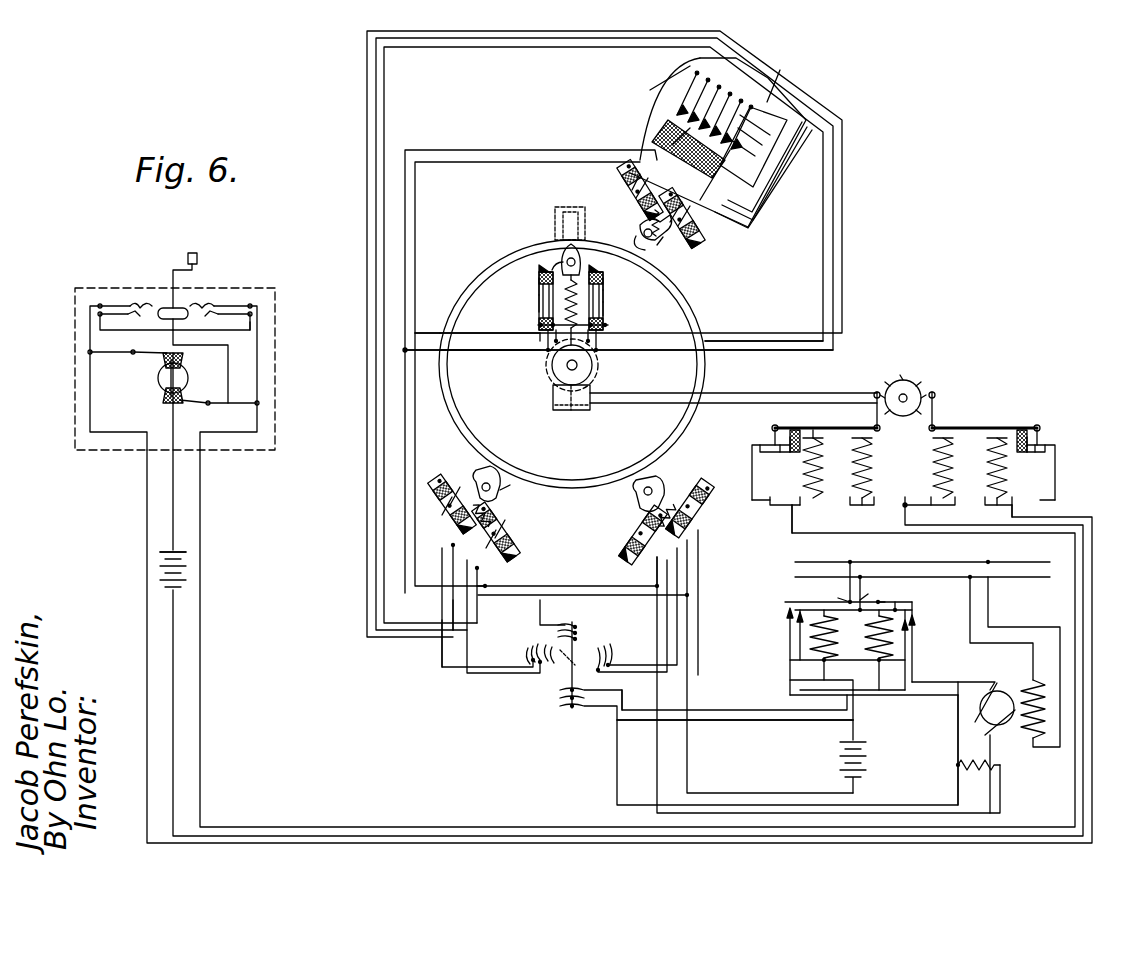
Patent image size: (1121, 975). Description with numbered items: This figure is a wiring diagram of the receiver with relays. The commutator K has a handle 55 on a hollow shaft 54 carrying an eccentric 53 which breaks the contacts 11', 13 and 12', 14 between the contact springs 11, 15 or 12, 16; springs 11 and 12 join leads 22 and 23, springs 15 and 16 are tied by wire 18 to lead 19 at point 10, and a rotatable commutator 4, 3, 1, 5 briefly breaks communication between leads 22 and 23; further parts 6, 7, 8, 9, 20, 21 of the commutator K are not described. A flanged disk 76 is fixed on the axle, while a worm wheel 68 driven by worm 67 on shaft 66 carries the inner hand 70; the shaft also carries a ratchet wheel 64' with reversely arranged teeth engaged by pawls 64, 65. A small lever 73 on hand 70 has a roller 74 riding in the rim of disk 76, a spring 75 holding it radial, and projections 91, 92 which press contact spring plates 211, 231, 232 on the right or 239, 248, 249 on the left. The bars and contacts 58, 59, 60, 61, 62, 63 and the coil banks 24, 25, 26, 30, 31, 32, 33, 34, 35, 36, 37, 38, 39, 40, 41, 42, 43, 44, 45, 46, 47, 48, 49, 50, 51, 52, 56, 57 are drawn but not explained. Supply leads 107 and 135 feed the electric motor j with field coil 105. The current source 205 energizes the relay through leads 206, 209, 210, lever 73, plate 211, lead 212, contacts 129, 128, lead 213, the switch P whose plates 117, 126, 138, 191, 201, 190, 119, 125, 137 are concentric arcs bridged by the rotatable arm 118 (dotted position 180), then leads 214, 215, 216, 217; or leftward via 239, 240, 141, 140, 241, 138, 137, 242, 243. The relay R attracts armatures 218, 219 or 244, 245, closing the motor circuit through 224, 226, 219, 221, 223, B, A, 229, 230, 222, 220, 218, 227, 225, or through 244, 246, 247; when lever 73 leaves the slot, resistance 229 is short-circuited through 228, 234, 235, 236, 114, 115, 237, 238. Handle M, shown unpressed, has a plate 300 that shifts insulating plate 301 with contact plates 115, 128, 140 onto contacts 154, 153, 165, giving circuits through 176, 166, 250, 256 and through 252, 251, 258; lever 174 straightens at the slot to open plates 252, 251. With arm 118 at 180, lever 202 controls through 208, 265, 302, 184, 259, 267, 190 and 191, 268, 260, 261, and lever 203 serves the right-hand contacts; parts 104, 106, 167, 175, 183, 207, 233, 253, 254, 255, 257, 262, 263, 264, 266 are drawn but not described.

The commutator disk 1 is at (186, 379).
The commutator part 3 is at (168, 378).
The commutator part 4 is at (183, 360).
The commutator part 5 is at (184, 395).
The contact 6 is at (138, 349).
The contact 7 is at (110, 346).
The terminal 8 is at (99, 305).
The terminal 9 is at (251, 305).
The connection point 10 is at (176, 333).
The contact spring 11 is at (115, 297).
The contact 11' is at (141, 298).
The contact spring 12 is at (232, 297).
The contact 12' is at (203, 298).
The contact 13 is at (135, 320).
The contact 14 is at (206, 320).
The contact spring 15 is at (113, 321).
The contact spring 16 is at (235, 321).
The wire 18 is at (247, 328).
The lead 19 is at (175, 540).
The battery plate 20 is at (177, 545).
The conductor 21 is at (173, 622).
The lead 22 is at (108, 406).
The lead 23 is at (255, 380).
The terminal 24 is at (920, 494).
The resistor base 25 is at (935, 482).
The terminal 26 is at (955, 500).
The terminal 30 is at (1010, 499).
The terminal 31 is at (972, 506).
The conductor 32 is at (1005, 508).
The frame 33 is at (1055, 480).
The contact 34 is at (1047, 455).
The contact 35 is at (1030, 456).
The contact 36 is at (1038, 442).
The contact 37 is at (1040, 442).
The frame 38 is at (1055, 492).
The resistor base 39 is at (875, 498).
The terminal 40 is at (860, 506).
The resistance coil 41 is at (873, 466).
The resistance coil 42 is at (874, 445).
The terminal 43 is at (825, 448).
The terminal 44 is at (778, 506).
The terminal 45 is at (815, 504).
The conductor 46 is at (790, 512).
The frame 47 is at (752, 488).
The contact 48 is at (758, 452).
The contact 49 is at (789, 455).
The contact 50 is at (778, 446).
The contact 51 is at (772, 437).
The frame 52 is at (752, 478).
The eccentric 53 is at (166, 320).
The shaft 54 is at (173, 268).
The handle 55 is at (194, 252).
The resistance coil 56 is at (954, 468).
The resistance coil 57 is at (824, 464).
The contact bar 58 is at (972, 426).
The contact bar 59 is at (830, 426).
The contact block 60 is at (1022, 428).
The contact block 61 is at (795, 428).
The pivot 62 is at (1038, 425).
The pivot 63 is at (775, 425).
The pawl 64 is at (943, 403).
The ratchet wheel 64' is at (908, 389).
The pawl 65 is at (875, 392).
The shaft 66 is at (745, 393).
The worm 67 is at (570, 410).
The worm wheel 68 is at (594, 367).
The inner hand 70 is at (572, 332).
The small lever 73 is at (580, 264).
The roller 74 is at (560, 262).
The spring 75 is at (575, 312).
The flanged disk 76 is at (690, 312).
The projection 91 is at (605, 272).
The projection 92 is at (544, 270).
The conductor 104 is at (1010, 627).
The field coil 105 is at (1040, 684).
The conductor 106 is at (970, 604).
The motor supply lead 107 is at (925, 562).
The contact 114 is at (690, 80).
The contact plate 115 is at (692, 90).
The switch plate 117 is at (577, 624).
The rotatable arm 118 is at (590, 655).
The switch plate 119 is at (560, 707).
The switch plate 125 is at (560, 699).
The switch plate 126 is at (578, 630).
The contact plate 128 is at (700, 118).
The contact 129 is at (696, 110).
The motor supply lead 135 is at (930, 577).
The switch plate 137 is at (560, 690).
The switch plate 138 is at (578, 638).
The contact plate 140 is at (752, 167).
The contact 141 is at (758, 158).
The contact 153 is at (758, 145).
The contact 154 is at (694, 100).
The contact 165 is at (750, 178).
The contact 166 is at (672, 248).
The brush lever 167 is at (640, 228).
The lever 174 is at (660, 240).
The pivot 175 is at (636, 238).
The conductor 176 is at (718, 170).
The switch arm position 180 is at (561, 662).
The spring 183 is at (486, 508).
The contact 184 is at (506, 500).
The switch plate 190 is at (555, 648).
The switch plate 191 is at (528, 648).
The switch plate 201 is at (548, 620).
The lever 202 is at (483, 468).
The lever 203 is at (660, 482).
The current source 205 is at (868, 762).
The lead 206 is at (515, 145).
The conductor 207 is at (700, 595).
The lead 208 is at (458, 605).
The lead 209 is at (405, 351).
The lead 210 is at (508, 350).
The contact spring plate 211 is at (608, 325).
The lead 212 is at (834, 190).
The lead 213 is at (374, 98).
The lead 214 is at (672, 720).
The conductor 215 is at (878, 664).
The conductor 216 is at (822, 664).
The conductor 217 is at (830, 696).
The relay armature 218 is at (885, 598).
The relay armature 219 is at (900, 606).
The conductor 220 is at (893, 650).
The conductor 221 is at (918, 620).
The conductor 222 is at (900, 694).
The conductor 223 is at (930, 678).
The conductor 224 is at (850, 558).
The conductor 225 is at (862, 580).
The contact 226 is at (843, 596).
The contact 227 is at (866, 593).
The conductor 228 is at (525, 162).
The resistance 229 is at (985, 758).
The conductor 230 is at (956, 696).
The contact spring plate 231 is at (605, 308).
The contact spring plate 232 is at (605, 297).
The conductor 233 is at (486, 586).
The conductor 234 is at (418, 333).
The conductor 235 is at (508, 333).
The conductor 236 is at (704, 58).
The conductor 237 is at (388, 95).
The conductor 238 is at (617, 745).
The contact spring plate 239 is at (605, 286).
The conductor 240 is at (823, 341).
The conductor 241 is at (372, 118).
The conductor 242 is at (625, 700).
The conductor 243 is at (788, 660).
The relay armature 244 is at (795, 602).
The relay armature 245 is at (812, 608).
The conductor 246 is at (790, 622).
The conductor 247 is at (798, 640).
The contact spring plate 248 is at (539, 300).
The contact spring plate 249 is at (539, 286).
The contact 250 is at (690, 215).
The contact plate 251 is at (688, 228).
The contact plate 252 is at (685, 240).
The brush 253 is at (640, 175).
The brush 254 is at (640, 186).
The brush 255 is at (636, 196).
The conductor 256 is at (782, 135).
The motor housing line 257 is at (780, 125).
The conductor 258 is at (752, 237).
The conductor 259 is at (512, 522).
The contact plate 260 is at (508, 535).
The contact plate 261 is at (500, 545).
The brush 262 is at (462, 486).
The brush 263 is at (456, 494).
The brush 264 is at (452, 504).
The conductor 265 is at (453, 572).
The conductor 266 is at (448, 572).
The conductor 267 is at (452, 598).
The conductor 268 is at (480, 570).
The plate 300 is at (652, 142).
The insulating plate 301 is at (680, 147).
The conductor 302 is at (448, 548).
The motor contact A is at (1001, 761).
The motor contact B is at (982, 702).
The commutator K is at (275, 367).
The switch handle M is at (648, 72).
The switch P is at (580, 665).
The electro-magnetic relay R is at (851, 634).
The electric motor j is at (997, 708).